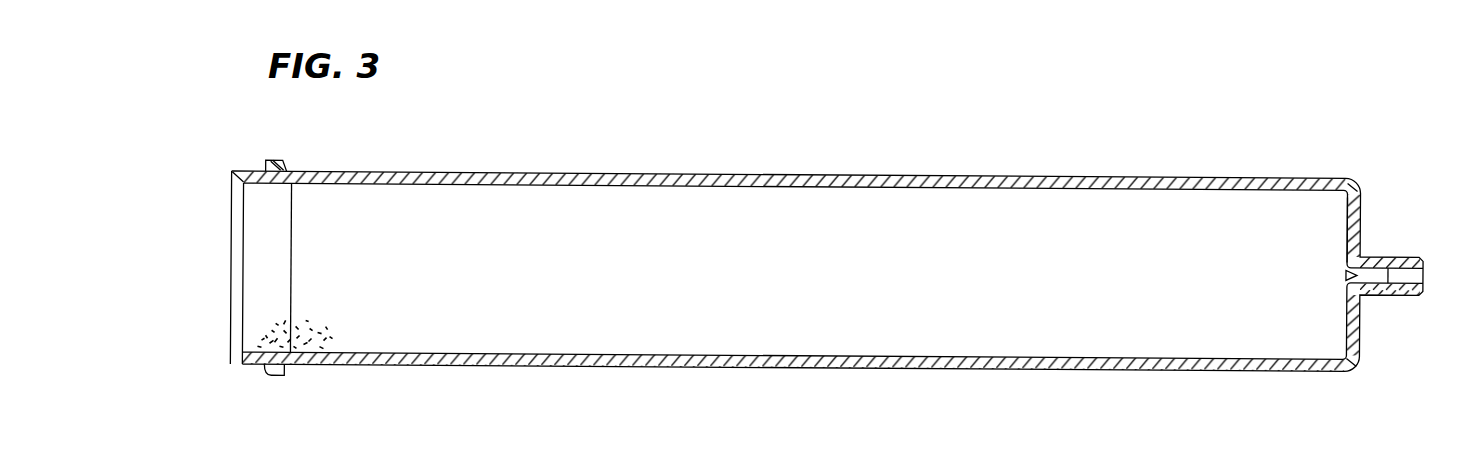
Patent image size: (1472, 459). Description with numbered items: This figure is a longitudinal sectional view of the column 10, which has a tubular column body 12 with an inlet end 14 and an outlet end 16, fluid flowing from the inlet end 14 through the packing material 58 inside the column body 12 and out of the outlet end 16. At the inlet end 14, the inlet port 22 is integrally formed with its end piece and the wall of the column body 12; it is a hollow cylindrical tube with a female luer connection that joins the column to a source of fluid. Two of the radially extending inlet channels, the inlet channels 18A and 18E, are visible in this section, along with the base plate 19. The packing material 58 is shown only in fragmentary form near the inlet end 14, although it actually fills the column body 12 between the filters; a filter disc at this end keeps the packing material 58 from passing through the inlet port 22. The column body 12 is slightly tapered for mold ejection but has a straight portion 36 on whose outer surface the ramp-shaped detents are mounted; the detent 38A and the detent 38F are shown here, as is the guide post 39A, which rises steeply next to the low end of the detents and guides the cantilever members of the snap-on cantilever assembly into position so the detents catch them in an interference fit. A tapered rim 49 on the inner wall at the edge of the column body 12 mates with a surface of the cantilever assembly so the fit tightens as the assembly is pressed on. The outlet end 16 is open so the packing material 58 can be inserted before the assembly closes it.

The column 10 is at (985, 124).
The column body 12 is at (748, 171).
The inlet end 14 is at (1383, 345).
The outlet end 16 is at (211, 197).
The inlet channel 18A is at (1362, 205).
The inlet channel 18E is at (1362, 323).
The base plate 19 is at (1350, 228).
The inlet port 22 is at (1398, 250).
The straight portion 36 is at (280, 242).
The detent 38A is at (285, 167).
The detent 38F is at (268, 372).
The guide post 39A is at (265, 160).
The tapered rim 49 is at (240, 331).
The packing material 58 is at (315, 330).